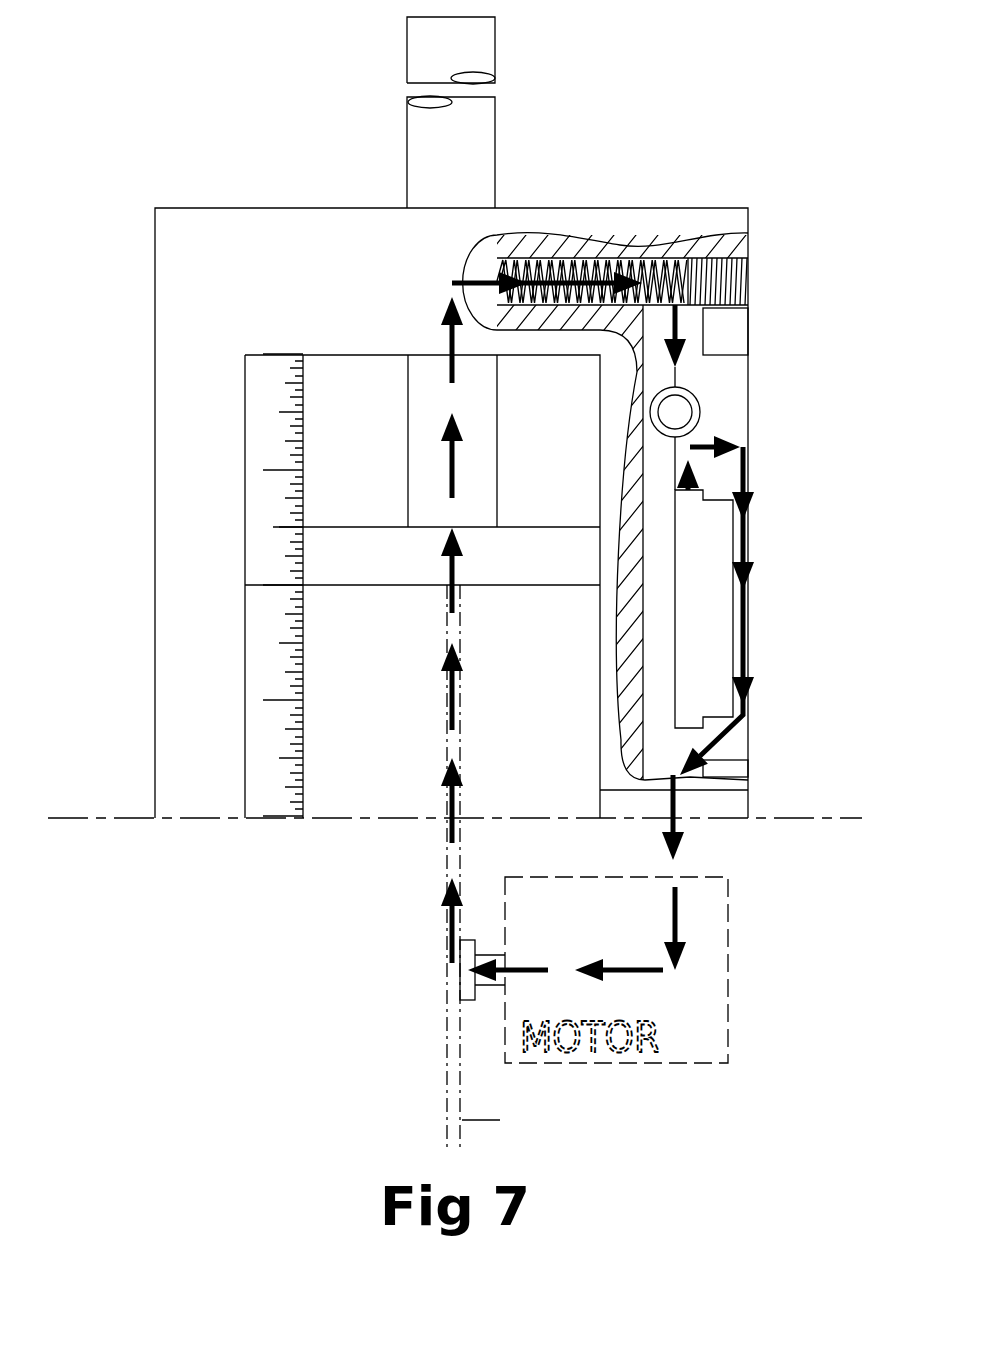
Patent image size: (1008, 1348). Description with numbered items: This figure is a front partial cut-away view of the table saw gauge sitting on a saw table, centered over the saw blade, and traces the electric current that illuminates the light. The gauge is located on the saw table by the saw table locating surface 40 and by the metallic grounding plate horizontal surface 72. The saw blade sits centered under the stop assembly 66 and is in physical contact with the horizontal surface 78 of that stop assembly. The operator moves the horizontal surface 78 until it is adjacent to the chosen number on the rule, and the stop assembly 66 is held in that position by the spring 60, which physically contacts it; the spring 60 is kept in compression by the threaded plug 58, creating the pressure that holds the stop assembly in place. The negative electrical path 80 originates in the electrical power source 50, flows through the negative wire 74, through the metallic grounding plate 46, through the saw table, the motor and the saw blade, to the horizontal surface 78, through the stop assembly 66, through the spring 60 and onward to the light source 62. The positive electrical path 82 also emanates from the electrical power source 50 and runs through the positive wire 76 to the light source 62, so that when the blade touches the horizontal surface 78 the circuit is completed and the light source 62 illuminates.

The saw table locating surface 40 is at (200, 818).
The metallic grounding plate 46 is at (733, 800).
The electrical power source 50 is at (692, 608).
The threaded plug 58 is at (748, 283).
The spring 60 is at (583, 258).
The light source 62 is at (675, 412).
The stop assembly 66 is at (510, 133).
The metallic grounding plate horizontal surface 72 is at (705, 820).
The negative wire 74 is at (745, 548).
The positive wire 76 is at (690, 437).
The horizontal surface 78 is at (392, 587).
The negative electrical path 80 is at (462, 660).
The positive electrical path 82 is at (690, 473).